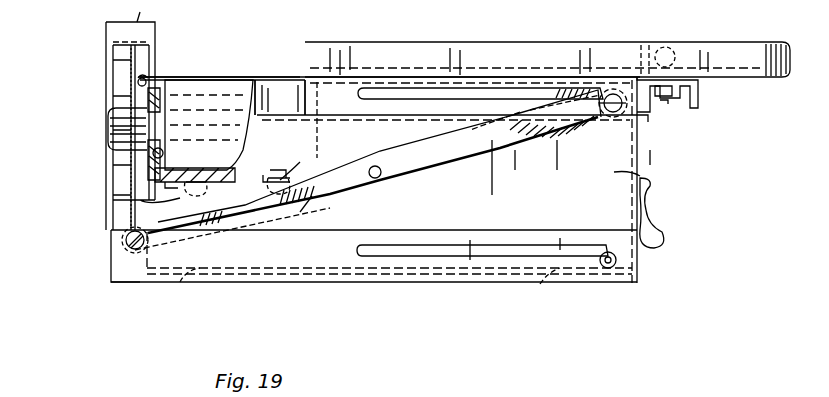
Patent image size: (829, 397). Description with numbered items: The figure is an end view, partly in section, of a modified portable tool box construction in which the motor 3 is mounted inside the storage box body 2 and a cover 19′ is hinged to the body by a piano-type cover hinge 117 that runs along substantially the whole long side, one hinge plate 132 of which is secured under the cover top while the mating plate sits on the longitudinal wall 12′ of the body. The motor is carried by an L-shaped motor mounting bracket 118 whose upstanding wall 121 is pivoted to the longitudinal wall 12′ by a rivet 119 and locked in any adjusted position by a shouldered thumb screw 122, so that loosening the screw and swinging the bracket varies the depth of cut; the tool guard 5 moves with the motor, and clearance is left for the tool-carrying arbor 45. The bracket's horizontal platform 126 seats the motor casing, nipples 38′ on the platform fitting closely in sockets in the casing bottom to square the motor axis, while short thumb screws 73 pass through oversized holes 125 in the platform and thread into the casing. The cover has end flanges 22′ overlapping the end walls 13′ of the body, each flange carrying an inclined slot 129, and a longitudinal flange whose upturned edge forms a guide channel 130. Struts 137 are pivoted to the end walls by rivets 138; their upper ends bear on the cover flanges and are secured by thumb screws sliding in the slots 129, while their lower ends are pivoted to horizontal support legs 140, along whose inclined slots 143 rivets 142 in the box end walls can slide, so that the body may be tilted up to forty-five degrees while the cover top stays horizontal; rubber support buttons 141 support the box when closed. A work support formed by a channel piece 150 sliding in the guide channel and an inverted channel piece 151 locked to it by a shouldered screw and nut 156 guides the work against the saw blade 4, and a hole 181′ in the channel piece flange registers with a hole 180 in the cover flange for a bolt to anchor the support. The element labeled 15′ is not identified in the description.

The storage box body 2 is at (540, 172).
The motor 3 is at (216, 116).
The saw blade 4 is at (114, 52).
The tool guard 5 is at (137, 22).
The longitudinal wall 12′ is at (168, 196).
The end wall 13′ is at (642, 176).
The handle 15′ is at (660, 216).
The cover 19′ is at (340, 104).
The cover end flange 22′ is at (274, 86).
The nipple 38′ is at (185, 186).
The tool-carrying arbor 45 is at (100, 136).
The thumb screw 73 is at (208, 190).
The cover hinge 117 is at (140, 78).
The motor mounting bracket 118 is at (140, 175).
The rivet 119 is at (153, 153).
The upstanding wall 121 is at (150, 97).
The shouldered thumb screw 122 is at (124, 240).
The oversized hole 125 is at (240, 170).
The platform 126 is at (312, 196).
The inclined slot 129 is at (492, 98).
The guide channel 130 is at (650, 120).
The hinge plate 132 is at (150, 78).
The strut 137 is at (444, 150).
The rivet 138 is at (376, 178).
The support leg 140 is at (132, 280).
The rubber support button 141 is at (186, 282).
The rivet 142 is at (604, 268).
The inclined slot 143 is at (490, 258).
The channel piece 150 is at (698, 99).
The channel piece 151 is at (742, 42).
The nut 156 is at (692, 110).
The hole 180 is at (612, 90).
The hole 181′ is at (641, 46).